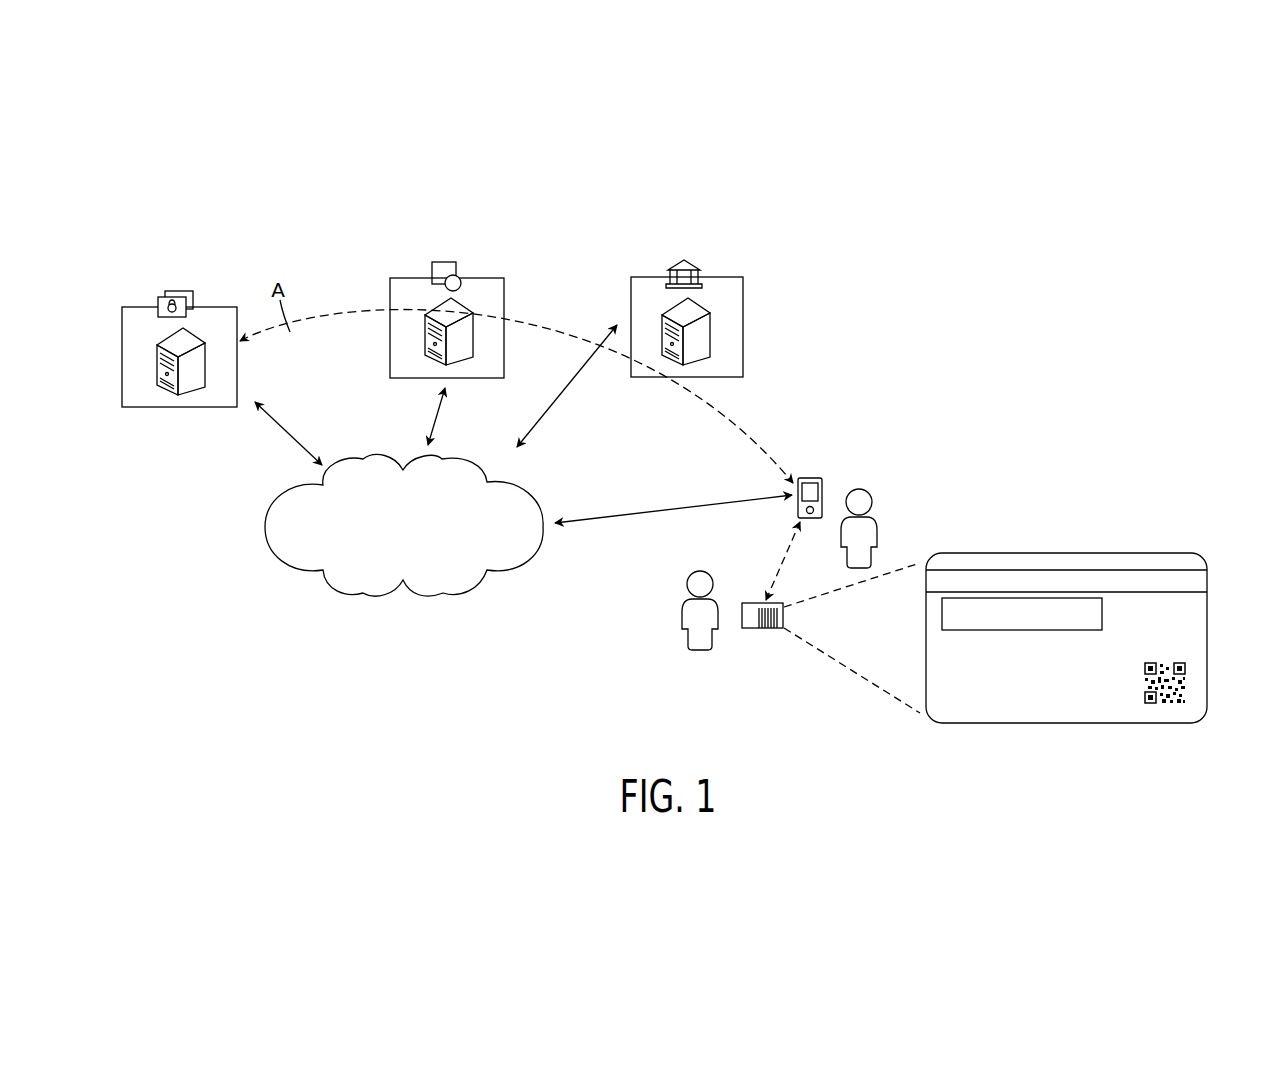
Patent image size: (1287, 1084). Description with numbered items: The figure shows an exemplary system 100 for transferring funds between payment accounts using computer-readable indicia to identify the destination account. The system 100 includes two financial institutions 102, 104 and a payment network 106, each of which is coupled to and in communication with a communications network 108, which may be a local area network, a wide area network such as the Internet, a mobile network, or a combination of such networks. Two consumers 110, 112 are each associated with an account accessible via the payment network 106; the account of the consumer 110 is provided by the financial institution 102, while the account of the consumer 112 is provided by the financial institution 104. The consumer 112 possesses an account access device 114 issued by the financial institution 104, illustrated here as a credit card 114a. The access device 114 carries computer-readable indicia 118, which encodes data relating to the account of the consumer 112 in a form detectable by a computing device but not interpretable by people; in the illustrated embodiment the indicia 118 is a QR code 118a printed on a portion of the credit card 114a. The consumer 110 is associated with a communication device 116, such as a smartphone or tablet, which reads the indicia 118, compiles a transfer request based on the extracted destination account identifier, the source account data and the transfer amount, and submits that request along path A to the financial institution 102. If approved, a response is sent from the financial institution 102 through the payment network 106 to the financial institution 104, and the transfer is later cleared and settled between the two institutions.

The system 100 is at (870, 255).
The financial institution 102 is at (717, 318).
The financial institution 104 is at (175, 349).
The payment network 106 is at (443, 290).
The communications network 108 is at (265, 520).
The consumer 110 is at (890, 522).
The consumer 112 is at (670, 613).
The account access device 114 is at (756, 615).
The credit card 114a is at (1101, 656).
The communication device 116 is at (823, 483).
The computer-readable indicia 118 is at (768, 630).
The QR code 118a is at (1163, 705).